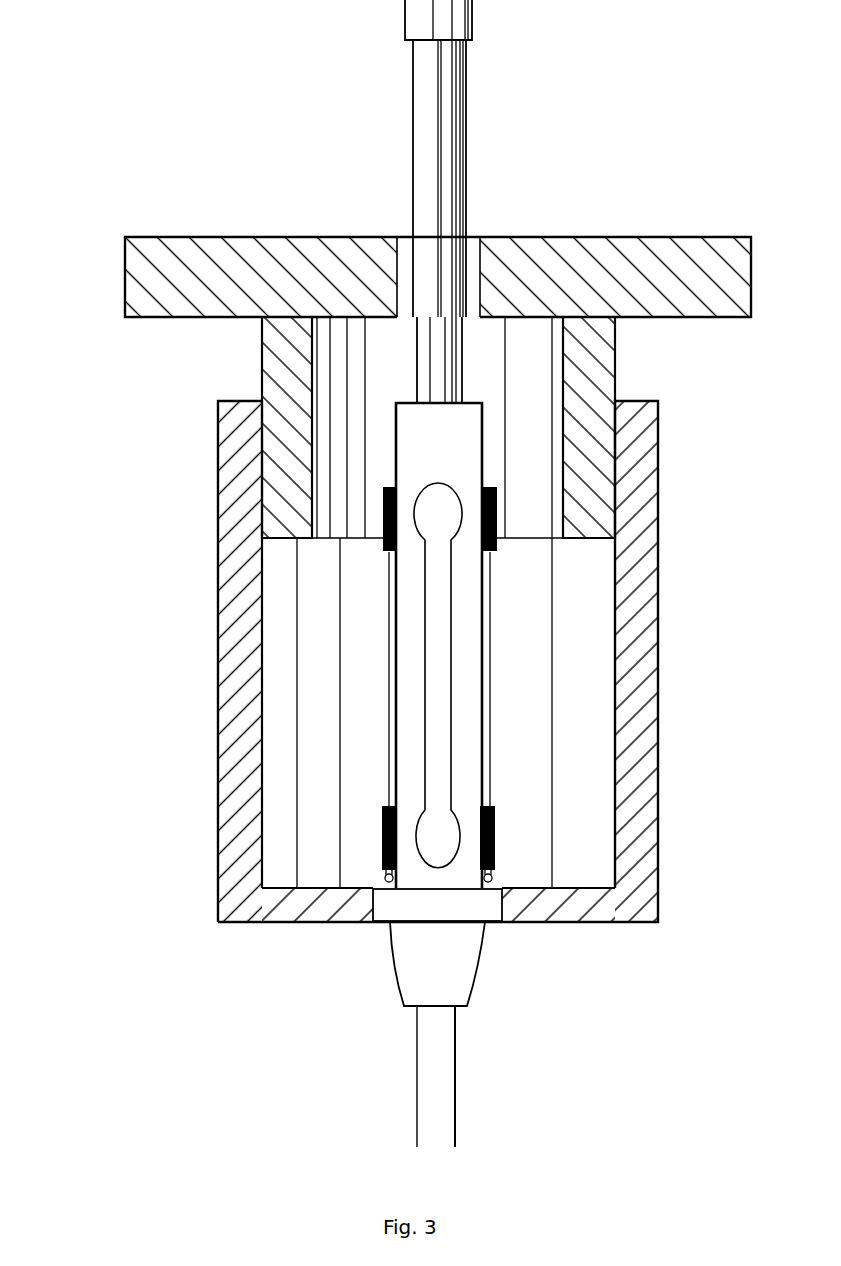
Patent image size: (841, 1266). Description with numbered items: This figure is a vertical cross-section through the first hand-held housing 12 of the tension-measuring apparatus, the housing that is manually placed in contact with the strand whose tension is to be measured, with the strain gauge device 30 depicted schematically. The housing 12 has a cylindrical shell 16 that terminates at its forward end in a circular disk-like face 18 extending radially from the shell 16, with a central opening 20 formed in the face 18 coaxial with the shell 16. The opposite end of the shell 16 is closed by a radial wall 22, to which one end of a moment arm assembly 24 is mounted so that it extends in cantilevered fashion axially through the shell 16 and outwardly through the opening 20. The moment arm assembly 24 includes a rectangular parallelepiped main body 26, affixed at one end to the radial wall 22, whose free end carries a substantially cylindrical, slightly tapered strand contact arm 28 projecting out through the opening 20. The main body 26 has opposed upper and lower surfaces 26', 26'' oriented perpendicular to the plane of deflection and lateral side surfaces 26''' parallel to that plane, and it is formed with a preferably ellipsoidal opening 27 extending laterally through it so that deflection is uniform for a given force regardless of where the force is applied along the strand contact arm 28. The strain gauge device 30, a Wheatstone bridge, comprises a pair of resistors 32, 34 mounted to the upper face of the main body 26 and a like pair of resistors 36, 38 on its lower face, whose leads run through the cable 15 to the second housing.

The first hand-held housing 12 is at (218, 840).
The cable 15 is at (416, 1095).
The cylindrical shell 16 is at (218, 608).
The circular disk-like face 18 is at (170, 318).
The central opening 20 is at (407, 238).
The radial wall 22 is at (285, 922).
The moment arm assembly 24 is at (484, 667).
The main body 26 is at (410, 675).
The upper surface 26' is at (364, 757).
The lower surface 26'' is at (514, 740).
The lateral side surfaces 26''' is at (510, 599).
The opening 27 is at (435, 612).
The strand contact arm 28 is at (420, 65).
The strain gauge device 30 is at (497, 511).
The resistor 32 is at (383, 496).
The resistor 34 is at (380, 813).
The resistor 36 is at (497, 490).
The resistor 38 is at (495, 823).